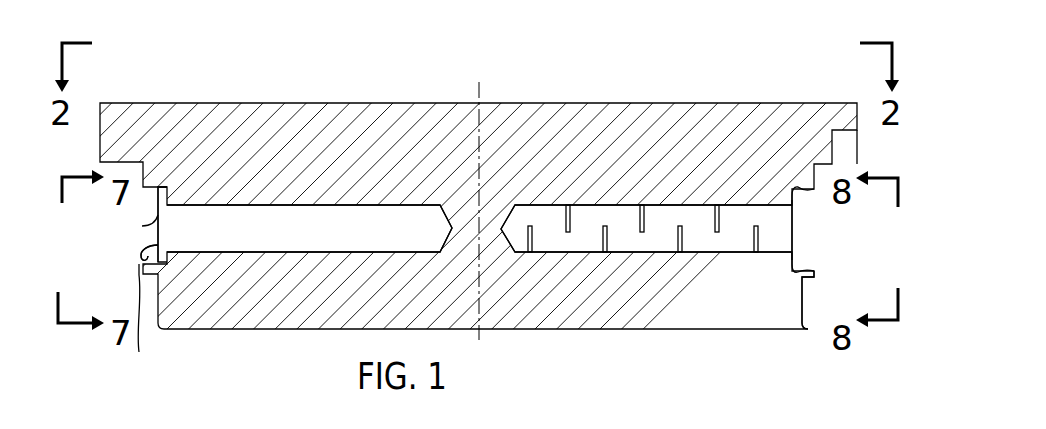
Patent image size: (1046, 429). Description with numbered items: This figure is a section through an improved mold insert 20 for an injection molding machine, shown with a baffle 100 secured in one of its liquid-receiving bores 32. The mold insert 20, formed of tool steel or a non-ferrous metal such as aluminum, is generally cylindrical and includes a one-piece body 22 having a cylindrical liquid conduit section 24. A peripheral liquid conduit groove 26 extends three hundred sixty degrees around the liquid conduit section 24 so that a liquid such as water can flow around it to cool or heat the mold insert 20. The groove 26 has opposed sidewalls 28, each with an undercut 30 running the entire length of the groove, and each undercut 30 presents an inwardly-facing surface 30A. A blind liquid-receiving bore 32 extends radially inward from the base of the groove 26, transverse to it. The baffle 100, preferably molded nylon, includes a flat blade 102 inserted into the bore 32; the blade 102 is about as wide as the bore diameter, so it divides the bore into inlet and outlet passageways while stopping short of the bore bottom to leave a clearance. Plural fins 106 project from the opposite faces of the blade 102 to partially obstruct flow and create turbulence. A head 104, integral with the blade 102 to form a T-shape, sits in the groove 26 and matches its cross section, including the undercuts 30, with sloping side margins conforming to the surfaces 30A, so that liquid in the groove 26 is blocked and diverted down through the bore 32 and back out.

The mold insert 20 is at (716, 82).
The one-piece body 22 is at (381, 110).
The liquid conduit section 24 is at (816, 277).
The liquid conduit groove 26 is at (134, 235).
The sidewall 28 is at (142, 322).
The undercut 30 is at (158, 187).
The inwardly-facing surface 30A is at (140, 256).
The liquid-receiving bore 32 is at (341, 240).
The baffle 100 is at (830, 222).
The blade 102 is at (629, 250).
The head 104 is at (806, 244).
The fins 106 is at (578, 205).